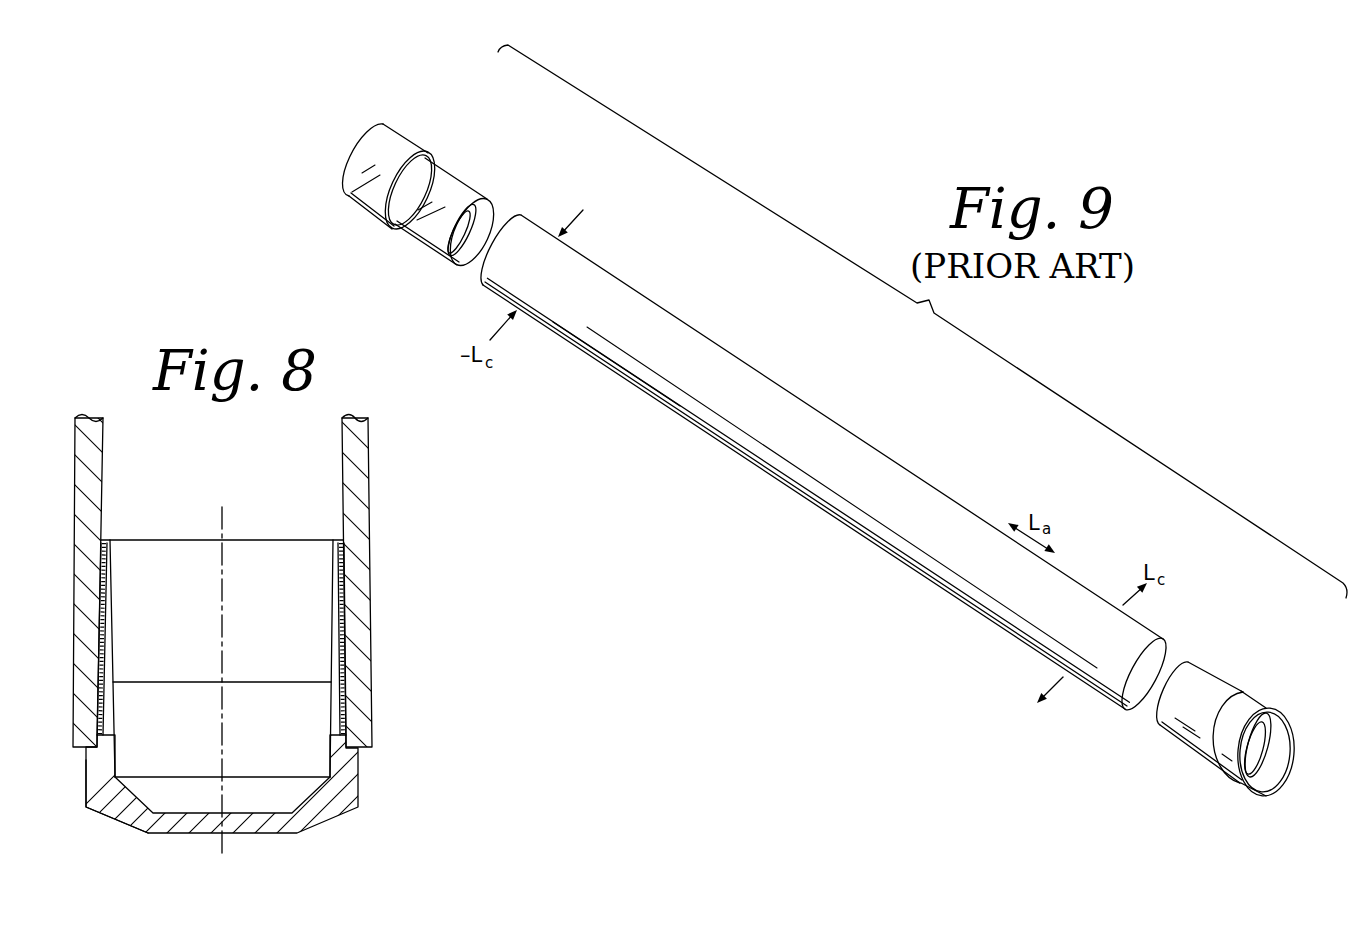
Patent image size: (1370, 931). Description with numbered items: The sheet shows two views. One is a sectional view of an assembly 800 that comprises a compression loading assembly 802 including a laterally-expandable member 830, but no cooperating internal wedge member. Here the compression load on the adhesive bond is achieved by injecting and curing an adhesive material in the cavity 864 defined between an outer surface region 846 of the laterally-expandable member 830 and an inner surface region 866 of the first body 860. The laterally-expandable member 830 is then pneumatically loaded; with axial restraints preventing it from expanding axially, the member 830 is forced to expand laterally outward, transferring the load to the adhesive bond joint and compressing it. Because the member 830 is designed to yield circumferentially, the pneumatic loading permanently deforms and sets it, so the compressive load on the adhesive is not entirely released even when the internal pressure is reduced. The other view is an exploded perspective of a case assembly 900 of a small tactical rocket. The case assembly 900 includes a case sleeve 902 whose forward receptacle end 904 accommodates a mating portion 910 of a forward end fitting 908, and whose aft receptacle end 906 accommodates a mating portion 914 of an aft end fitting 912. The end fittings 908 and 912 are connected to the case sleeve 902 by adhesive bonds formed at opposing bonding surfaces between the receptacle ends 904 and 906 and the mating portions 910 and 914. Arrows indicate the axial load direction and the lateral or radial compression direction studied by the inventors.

In FIG. 8, the assembly 800 is at (389, 529).
In FIG. 8, the compression loading assembly 802 is at (70, 800).
In FIG. 8, the laterally-expandable member 830 is at (347, 772).
In FIG. 8, the outer surface region 846 is at (353, 590).
In FIG. 8, the first body 860 is at (352, 459).
In FIG. 8, the cavity 864 is at (350, 638).
In FIG. 8, the inner surface region 866 is at (343, 692).
In FIG. 9, the case assembly 900 is at (768, 316).
In FIG. 9, the case sleeve 902 is at (868, 446).
In FIG. 9, the forward receptacle end 904 is at (518, 213).
In FIG. 9, the aft receptacle end 906 is at (1157, 648).
In FIG. 9, the forward end fitting 908 is at (432, 139).
In FIG. 9, the mating portion 910 is at (420, 247).
In FIG. 9, the aft end fitting 912 is at (1219, 789).
In FIG. 9, the mating portion 914 is at (1165, 742).